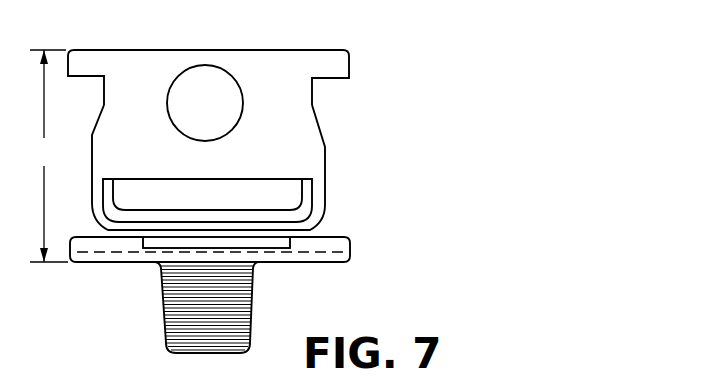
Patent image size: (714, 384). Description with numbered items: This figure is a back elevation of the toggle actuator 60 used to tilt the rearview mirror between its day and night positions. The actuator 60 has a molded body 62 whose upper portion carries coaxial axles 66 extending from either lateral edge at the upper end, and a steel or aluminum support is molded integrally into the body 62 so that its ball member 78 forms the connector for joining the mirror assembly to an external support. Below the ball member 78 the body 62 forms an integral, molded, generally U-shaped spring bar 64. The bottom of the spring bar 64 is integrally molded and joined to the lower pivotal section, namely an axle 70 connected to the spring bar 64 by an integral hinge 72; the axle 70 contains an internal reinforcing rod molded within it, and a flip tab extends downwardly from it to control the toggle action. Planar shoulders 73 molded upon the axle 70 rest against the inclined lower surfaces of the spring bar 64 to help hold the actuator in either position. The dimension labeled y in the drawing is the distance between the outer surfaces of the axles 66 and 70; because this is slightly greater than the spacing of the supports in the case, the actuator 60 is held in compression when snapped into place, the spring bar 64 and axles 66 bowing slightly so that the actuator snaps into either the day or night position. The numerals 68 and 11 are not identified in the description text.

The toggle actuator 60 is at (374, 42).
The molded body 62 is at (300, 122).
The spring bar 64 is at (316, 207).
The axles 66 is at (92, 57).
The shank 68 is at (138, 268).
The axle 70 is at (105, 255).
The integral hinge 72 is at (247, 261).
The planar shoulders 73 is at (254, 244).
The ball member 78 is at (211, 80).
The panel 11 is at (353, 265).